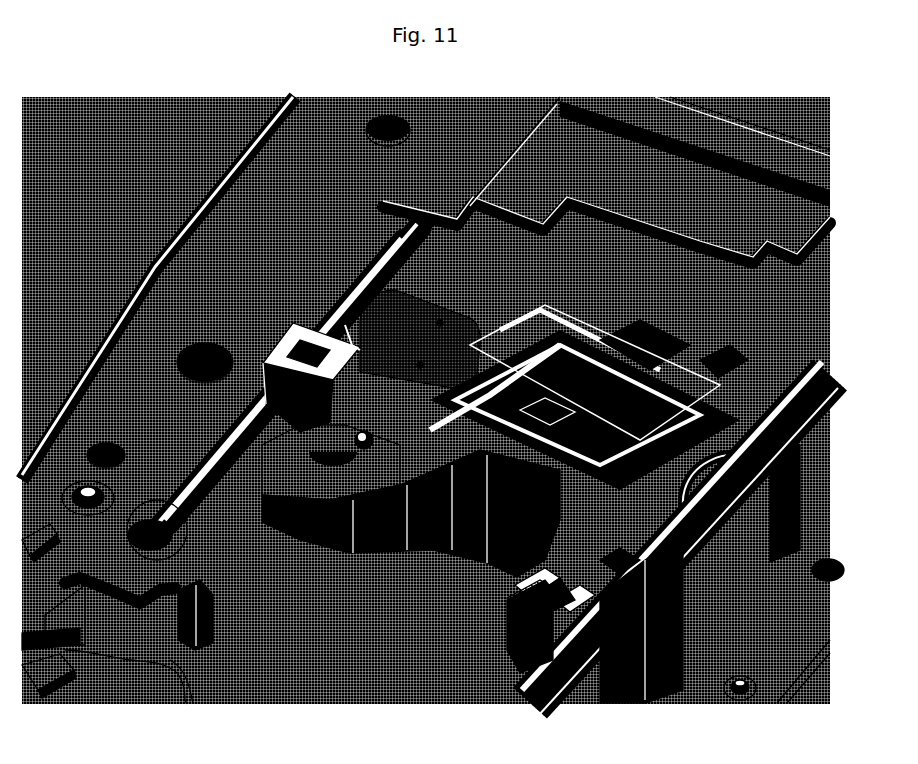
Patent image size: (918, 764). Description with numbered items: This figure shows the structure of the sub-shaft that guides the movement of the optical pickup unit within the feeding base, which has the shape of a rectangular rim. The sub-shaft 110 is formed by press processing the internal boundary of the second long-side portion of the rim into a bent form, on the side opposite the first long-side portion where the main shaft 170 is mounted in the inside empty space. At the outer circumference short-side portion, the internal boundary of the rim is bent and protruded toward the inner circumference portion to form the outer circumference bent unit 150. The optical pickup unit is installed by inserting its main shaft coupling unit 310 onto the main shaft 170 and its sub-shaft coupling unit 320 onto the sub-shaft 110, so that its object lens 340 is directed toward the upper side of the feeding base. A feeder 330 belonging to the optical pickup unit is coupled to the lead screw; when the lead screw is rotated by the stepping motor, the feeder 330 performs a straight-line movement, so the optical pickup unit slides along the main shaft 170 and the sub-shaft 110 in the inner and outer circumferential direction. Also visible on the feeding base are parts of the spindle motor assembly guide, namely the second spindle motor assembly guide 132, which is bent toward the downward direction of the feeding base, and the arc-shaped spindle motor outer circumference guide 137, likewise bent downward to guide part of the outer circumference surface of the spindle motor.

The sub-shaft 110 is at (335, 305).
The second spindle motor assembly guide 132 is at (80, 623).
The spindle motor outer circumference guide 137 is at (185, 695).
The outer circumference bent unit 150 is at (630, 196).
The main shaft 170 is at (803, 390).
The main shaft coupling unit 310 is at (518, 580).
The sub-shaft coupling unit 320 is at (258, 332).
The feeder 330 is at (510, 652).
The object lens 340 is at (355, 547).